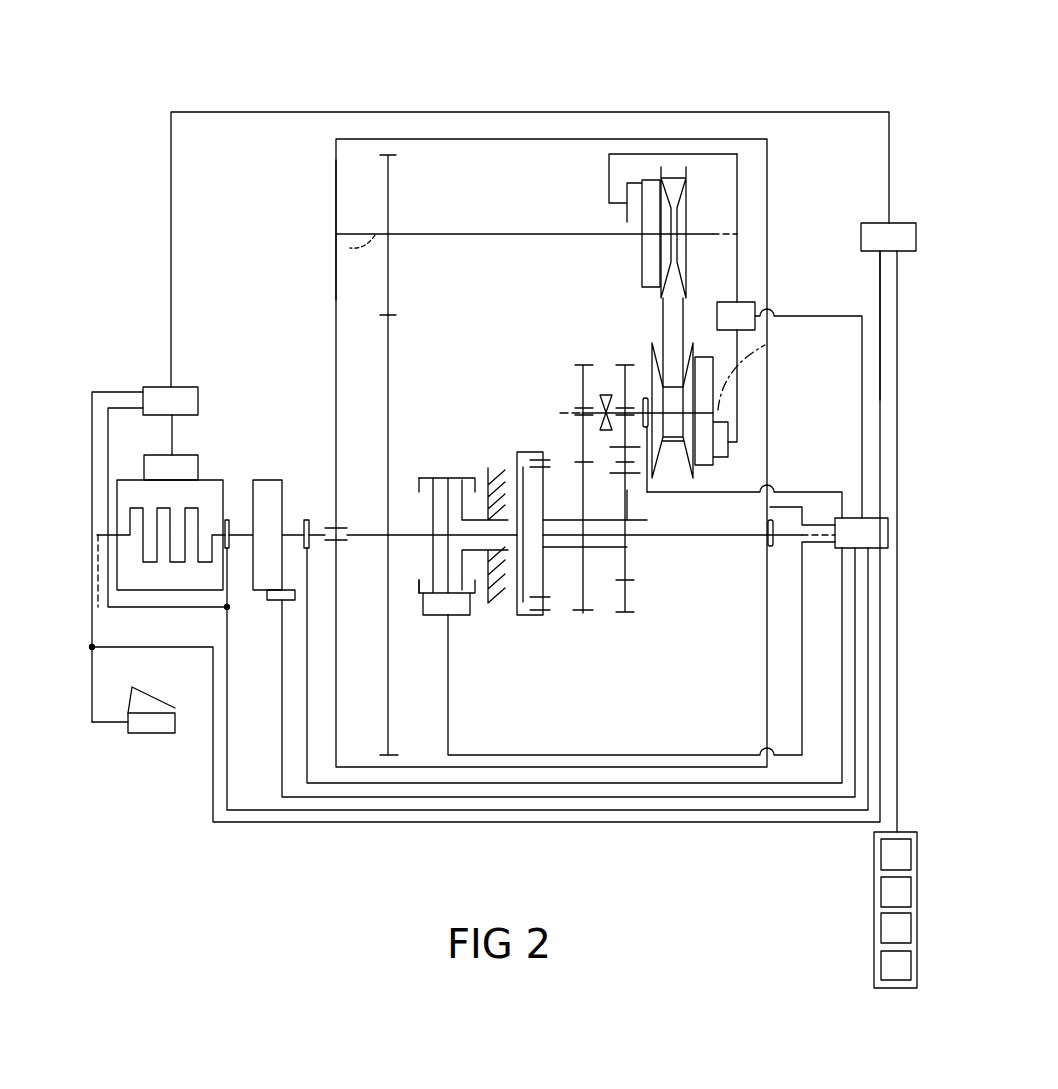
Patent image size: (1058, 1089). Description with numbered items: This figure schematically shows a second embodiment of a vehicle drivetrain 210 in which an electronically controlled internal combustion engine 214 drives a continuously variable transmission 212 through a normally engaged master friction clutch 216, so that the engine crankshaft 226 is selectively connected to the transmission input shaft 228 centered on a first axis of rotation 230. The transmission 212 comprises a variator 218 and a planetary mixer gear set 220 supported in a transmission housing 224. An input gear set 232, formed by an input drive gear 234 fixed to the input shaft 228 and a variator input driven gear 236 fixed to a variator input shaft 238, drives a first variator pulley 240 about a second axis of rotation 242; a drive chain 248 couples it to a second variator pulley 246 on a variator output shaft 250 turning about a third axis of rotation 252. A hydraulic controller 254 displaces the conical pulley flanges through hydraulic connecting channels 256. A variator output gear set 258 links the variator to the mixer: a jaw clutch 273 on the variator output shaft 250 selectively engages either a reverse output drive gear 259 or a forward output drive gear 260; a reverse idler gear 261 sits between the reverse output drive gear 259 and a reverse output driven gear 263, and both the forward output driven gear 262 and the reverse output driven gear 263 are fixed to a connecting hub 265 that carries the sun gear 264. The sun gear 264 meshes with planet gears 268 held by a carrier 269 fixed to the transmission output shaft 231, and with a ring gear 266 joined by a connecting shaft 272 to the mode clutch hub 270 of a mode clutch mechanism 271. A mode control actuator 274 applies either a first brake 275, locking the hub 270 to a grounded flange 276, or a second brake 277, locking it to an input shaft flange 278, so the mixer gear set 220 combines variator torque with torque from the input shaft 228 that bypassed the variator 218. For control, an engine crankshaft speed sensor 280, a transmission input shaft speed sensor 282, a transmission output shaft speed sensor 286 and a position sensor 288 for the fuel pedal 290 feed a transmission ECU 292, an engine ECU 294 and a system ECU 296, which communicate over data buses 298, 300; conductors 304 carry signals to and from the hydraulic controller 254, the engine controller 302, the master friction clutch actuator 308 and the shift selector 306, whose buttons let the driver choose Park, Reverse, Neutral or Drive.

The vehicle drivetrain 210 is at (650, 76).
The continuously variable transmission 212 is at (322, 166).
The electronically controlled internal combustion engine 214 is at (131, 468).
The master friction clutch 216 is at (268, 480).
The variator 218 is at (568, 178).
The planetary mixer gear set 220 is at (486, 402).
The transmission housing 224 is at (336, 198).
The engine crankshaft 226 is at (220, 520).
The transmission input shaft 228 is at (366, 545).
The first axis of rotation 230 is at (98, 607).
The transmission output shaft 231 is at (735, 545).
The input gear set 232 is at (352, 291).
The input drive gear 234 is at (392, 348).
The variator input driven gear 236 is at (396, 198).
The variator input shaft 238 is at (508, 234).
The first variator pulley 240 is at (694, 198).
The second axis of rotation 242 is at (350, 245).
The second variator pulley 246 is at (704, 467).
The drive chain 248 is at (663, 323).
The variator output shaft 250 is at (566, 400).
The third axis of rotation 252 is at (767, 344).
The hydraulic controller 254 is at (723, 327).
The hydraulic connecting channels 256 is at (735, 250).
The variator output gear set 258 is at (567, 648).
The reverse output drive gear 259 is at (644, 395).
The forward output drive gear 260 is at (580, 364).
The reverse idler gear 261 is at (632, 505).
The forward output driven gear 262 is at (588, 582).
The reverse output driven gear 263 is at (640, 540).
The sun gear 264 is at (560, 557).
The connecting hub 265 is at (566, 553).
The ring gear 266 is at (527, 614).
The planet gears 268 is at (537, 470).
The carrier 269 is at (525, 455).
The mode clutch hub 270 is at (423, 596).
The mode clutch mechanism 271 is at (435, 632).
The connecting shaft 272 is at (512, 462).
The jaw clutch 273 is at (607, 380).
The mode control actuator 274 is at (452, 625).
The first brake 275 is at (417, 486).
The grounded flange 276 is at (475, 478).
The second brake 277 is at (418, 585).
The input shaft flange 278 is at (430, 507).
The engine crankshaft speed sensor 280 is at (229, 520).
The transmission input shaft speed sensor 282 is at (307, 520).
The transmission output shaft speed sensor 286 is at (772, 545).
The position sensor 288 is at (140, 733).
The fuel pedal 290 is at (156, 707).
The transmission electronic control unit 292 is at (875, 545).
The engine ECU 294 is at (158, 413).
The system ECU 296 is at (902, 249).
The data bus 298 is at (880, 290).
The data bus 300 is at (789, 113).
The engine controller 302 is at (158, 478).
The conductors 304 is at (110, 408).
The shift selector 306 is at (874, 903).
The master friction clutch actuator 308 is at (267, 598).